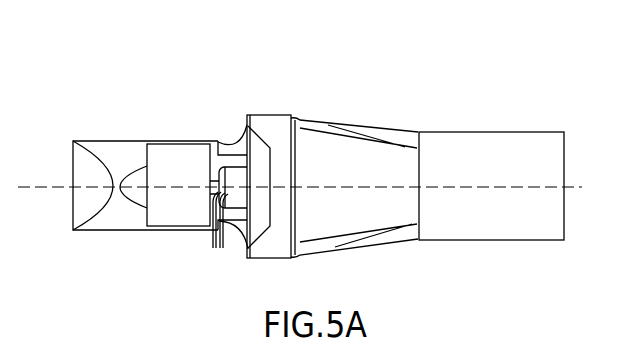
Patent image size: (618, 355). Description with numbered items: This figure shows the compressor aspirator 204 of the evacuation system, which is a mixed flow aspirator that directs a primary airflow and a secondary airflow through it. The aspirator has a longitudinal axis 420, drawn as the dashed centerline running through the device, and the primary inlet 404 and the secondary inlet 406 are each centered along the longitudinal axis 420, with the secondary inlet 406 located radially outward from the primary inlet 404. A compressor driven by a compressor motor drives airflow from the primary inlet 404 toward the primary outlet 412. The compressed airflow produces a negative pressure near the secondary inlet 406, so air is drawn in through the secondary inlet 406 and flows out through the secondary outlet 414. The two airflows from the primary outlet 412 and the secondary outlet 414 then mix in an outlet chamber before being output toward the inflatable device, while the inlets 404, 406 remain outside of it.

The compressor aspirator 204 is at (432, 83).
The primary inlet 404 is at (72, 200).
The secondary inlet 406 is at (246, 253).
The primary outlet 412 is at (266, 228).
The secondary outlet 414 is at (255, 114).
The longitudinal axis 420 is at (463, 187).